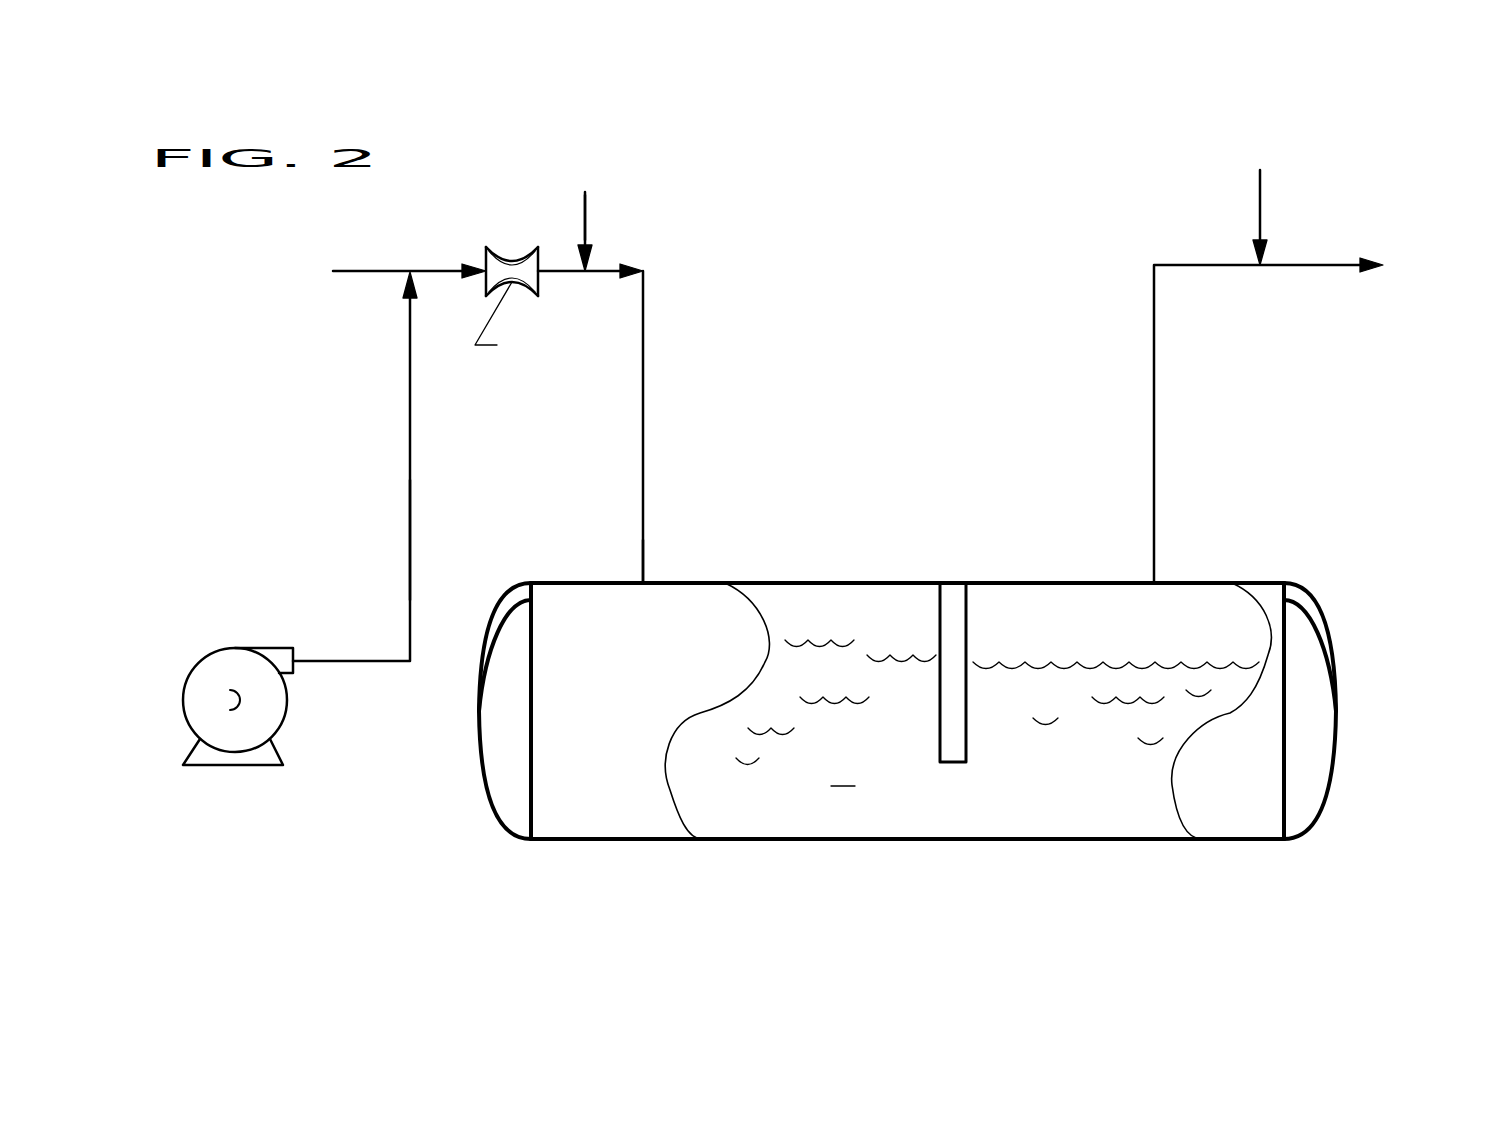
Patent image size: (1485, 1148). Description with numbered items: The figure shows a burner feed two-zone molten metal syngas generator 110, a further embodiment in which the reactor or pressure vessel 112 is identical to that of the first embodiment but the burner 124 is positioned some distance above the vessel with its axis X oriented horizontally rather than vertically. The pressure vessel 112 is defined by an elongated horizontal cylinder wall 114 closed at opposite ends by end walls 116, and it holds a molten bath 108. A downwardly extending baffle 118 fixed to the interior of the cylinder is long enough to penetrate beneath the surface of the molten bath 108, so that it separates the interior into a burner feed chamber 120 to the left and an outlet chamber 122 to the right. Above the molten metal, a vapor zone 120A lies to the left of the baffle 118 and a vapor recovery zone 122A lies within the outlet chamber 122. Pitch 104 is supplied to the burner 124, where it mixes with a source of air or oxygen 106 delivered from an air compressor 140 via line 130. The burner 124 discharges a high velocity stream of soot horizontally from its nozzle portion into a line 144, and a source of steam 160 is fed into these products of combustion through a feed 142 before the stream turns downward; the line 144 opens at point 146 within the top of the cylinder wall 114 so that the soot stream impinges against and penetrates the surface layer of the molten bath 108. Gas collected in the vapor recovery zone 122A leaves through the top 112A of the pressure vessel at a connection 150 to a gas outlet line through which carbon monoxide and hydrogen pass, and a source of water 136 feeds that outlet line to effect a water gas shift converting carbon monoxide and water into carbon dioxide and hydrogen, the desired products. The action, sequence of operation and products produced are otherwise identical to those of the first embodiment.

The pitch 104 is at (367, 263).
The air or oxygen 106 is at (408, 452).
The molten bath 108 is at (920, 736).
The burner feed two-zone molten metal syngas generator 110 is at (873, 397).
The pressure vessel 112 is at (564, 840).
The top of the pressure vessel 112A is at (989, 583).
The cylinder wall 114 is at (1262, 583).
The end walls 116 is at (492, 709).
The baffle 118 is at (940, 600).
The burner feed chamber 120 is at (353, 272).
The vapor zone 120A is at (832, 621).
The outlet chamber 122 is at (1115, 822).
The vapor recovery zone 122A is at (1228, 642).
The burner 124 is at (512, 256).
The line 130 is at (412, 525).
The source of water 136 is at (1274, 200).
The air compressor 140 is at (267, 716).
The feed 142 is at (587, 222).
The line 144 is at (645, 417).
The point 146 is at (645, 572).
The connection to gas outlet line 150 is at (1155, 583).
The steam 160 is at (621, 204).